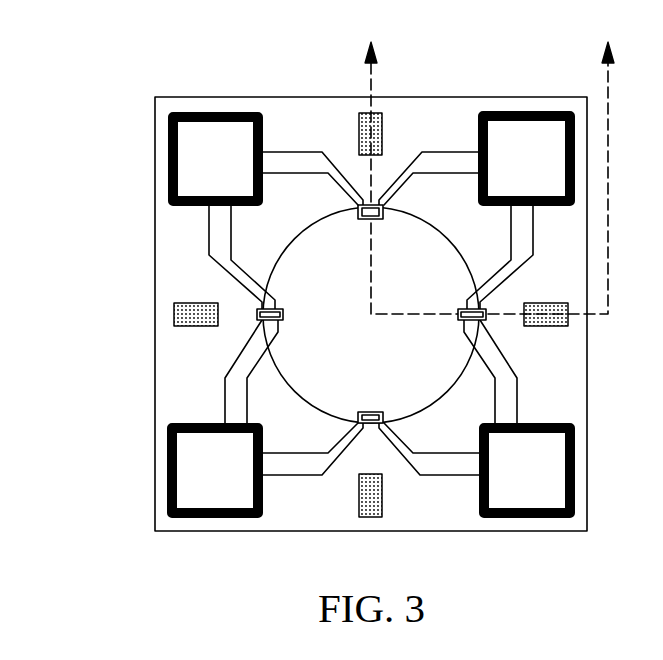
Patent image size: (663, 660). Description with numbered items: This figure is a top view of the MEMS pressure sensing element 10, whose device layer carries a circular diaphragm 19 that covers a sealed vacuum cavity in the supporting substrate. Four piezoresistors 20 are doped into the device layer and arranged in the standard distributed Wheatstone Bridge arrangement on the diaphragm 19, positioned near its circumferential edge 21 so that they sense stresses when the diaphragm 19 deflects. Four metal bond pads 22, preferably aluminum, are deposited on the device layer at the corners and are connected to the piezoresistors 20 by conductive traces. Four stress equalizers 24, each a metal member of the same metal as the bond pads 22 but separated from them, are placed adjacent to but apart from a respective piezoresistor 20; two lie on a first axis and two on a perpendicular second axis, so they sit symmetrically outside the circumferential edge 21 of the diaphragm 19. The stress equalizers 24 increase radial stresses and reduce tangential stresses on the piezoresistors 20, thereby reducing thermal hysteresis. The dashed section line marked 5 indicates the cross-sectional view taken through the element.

The MEMS pressure sensing element 10 is at (98, 57).
The circumferential edge 21 is at (155, 243).
The bond pads 22 is at (197, 160).
The piezoresistors 20 is at (378, 219).
The diaphragm 19 is at (318, 413).
The stress equalizers 24 is at (359, 131).
The section line 5- 5 is at (489, 164).